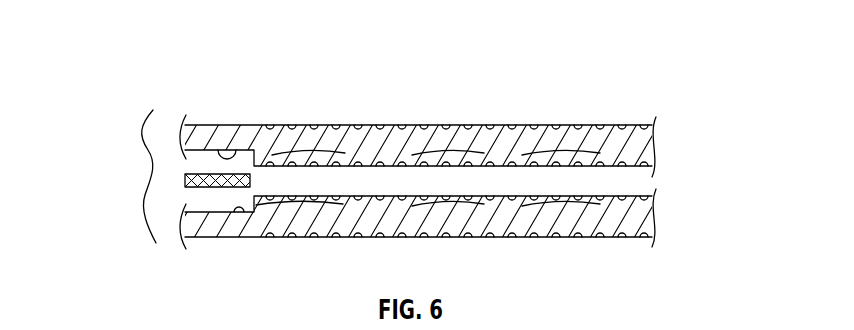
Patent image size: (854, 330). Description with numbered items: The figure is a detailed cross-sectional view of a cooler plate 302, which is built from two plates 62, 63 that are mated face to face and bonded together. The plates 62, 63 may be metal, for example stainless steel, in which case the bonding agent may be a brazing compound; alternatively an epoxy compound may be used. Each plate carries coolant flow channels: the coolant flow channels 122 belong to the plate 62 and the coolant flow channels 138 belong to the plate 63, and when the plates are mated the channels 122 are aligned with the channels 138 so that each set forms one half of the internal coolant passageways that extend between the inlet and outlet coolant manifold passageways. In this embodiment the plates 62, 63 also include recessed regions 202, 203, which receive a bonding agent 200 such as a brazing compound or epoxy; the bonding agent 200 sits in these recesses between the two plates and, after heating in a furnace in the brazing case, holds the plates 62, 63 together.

The plate 62 is at (657, 214).
The plate 63 is at (657, 148).
The coolant flow channels 122 is at (300, 210).
The coolant flow channels 138 is at (318, 142).
The bonding agent 200 is at (187, 188).
The recessed region 202 is at (214, 148).
The recessed region 203 is at (236, 212).
The cooler plate 302 is at (148, 172).